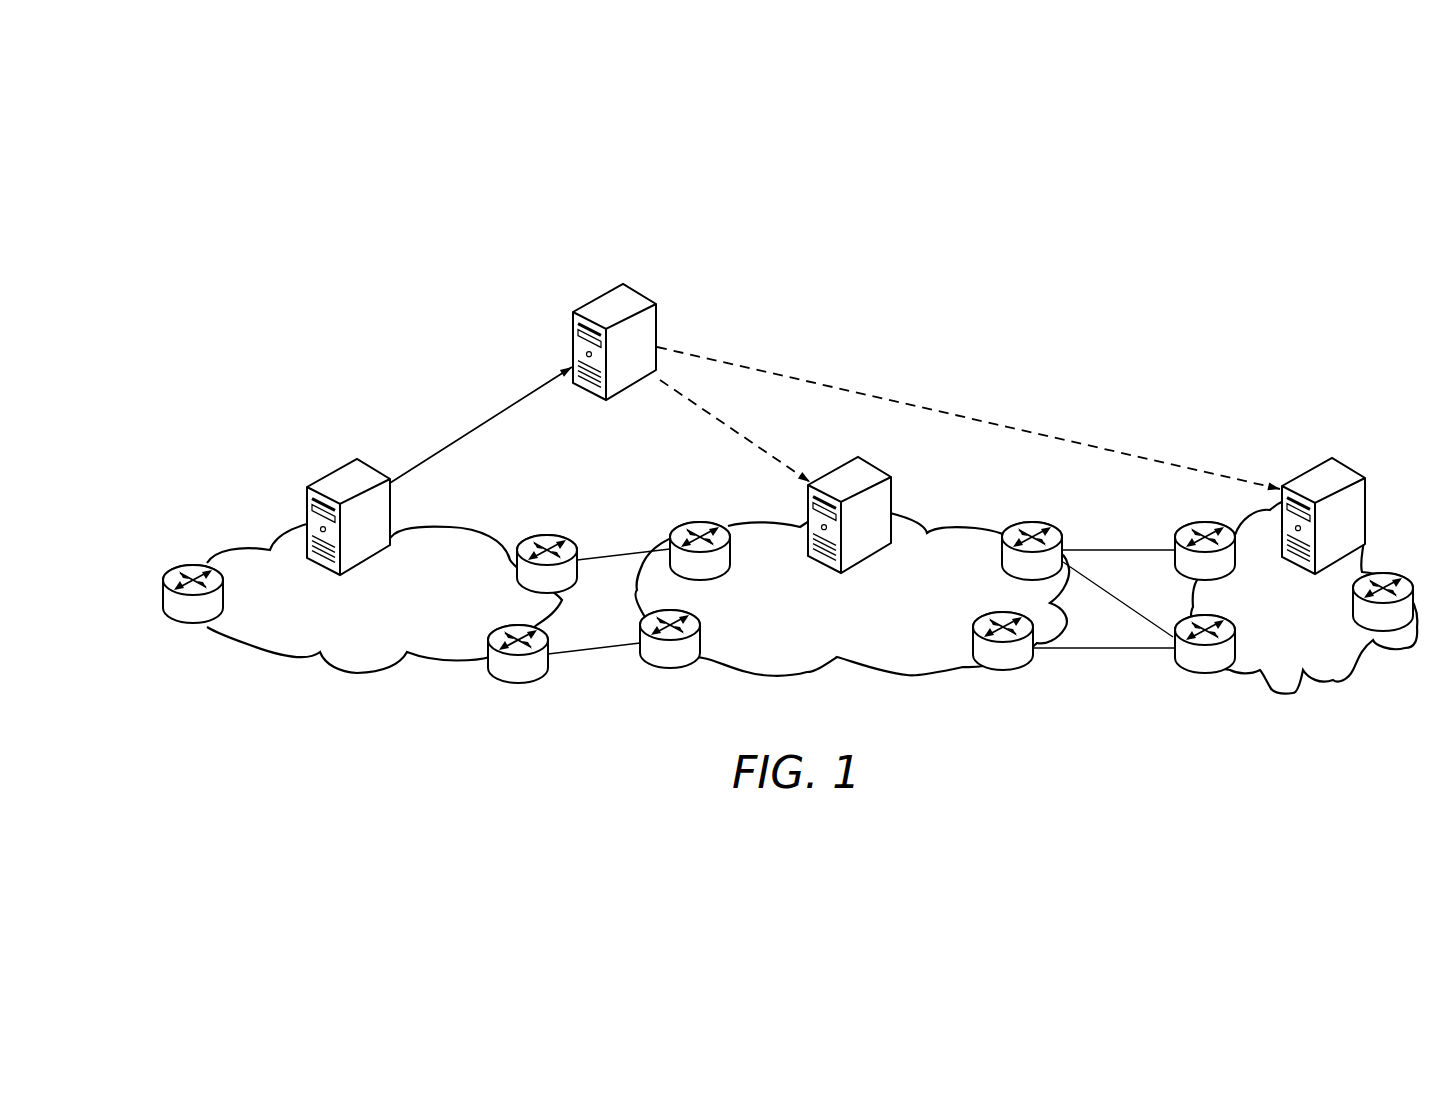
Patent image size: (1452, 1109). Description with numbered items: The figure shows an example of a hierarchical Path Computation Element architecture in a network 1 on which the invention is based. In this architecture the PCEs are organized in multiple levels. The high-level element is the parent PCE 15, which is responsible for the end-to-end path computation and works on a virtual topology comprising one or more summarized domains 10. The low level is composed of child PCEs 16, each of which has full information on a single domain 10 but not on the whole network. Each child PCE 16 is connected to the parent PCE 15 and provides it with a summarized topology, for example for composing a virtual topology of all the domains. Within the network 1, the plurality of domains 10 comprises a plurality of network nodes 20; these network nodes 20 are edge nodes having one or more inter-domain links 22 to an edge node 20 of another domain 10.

The network 1 is at (277, 352).
The domain 10 is at (370, 673).
The parent PCE 15 is at (587, 303).
The child PCE 16 is at (322, 473).
The network node 20 is at (190, 566).
The inter-domain link 22 is at (605, 560).